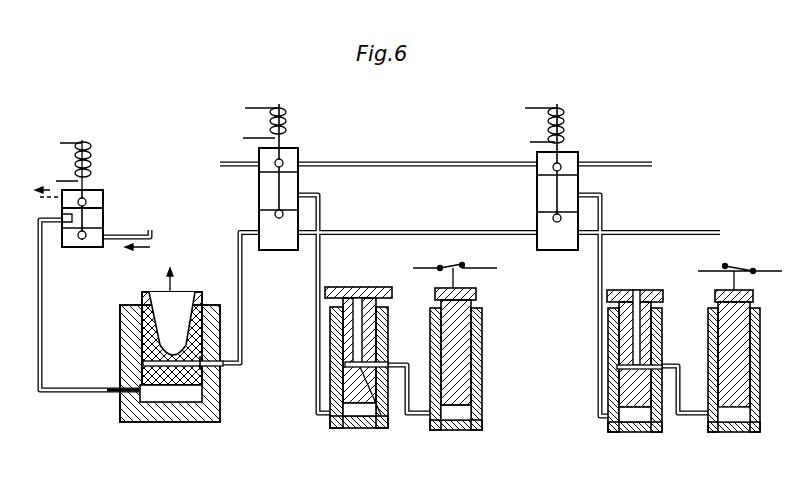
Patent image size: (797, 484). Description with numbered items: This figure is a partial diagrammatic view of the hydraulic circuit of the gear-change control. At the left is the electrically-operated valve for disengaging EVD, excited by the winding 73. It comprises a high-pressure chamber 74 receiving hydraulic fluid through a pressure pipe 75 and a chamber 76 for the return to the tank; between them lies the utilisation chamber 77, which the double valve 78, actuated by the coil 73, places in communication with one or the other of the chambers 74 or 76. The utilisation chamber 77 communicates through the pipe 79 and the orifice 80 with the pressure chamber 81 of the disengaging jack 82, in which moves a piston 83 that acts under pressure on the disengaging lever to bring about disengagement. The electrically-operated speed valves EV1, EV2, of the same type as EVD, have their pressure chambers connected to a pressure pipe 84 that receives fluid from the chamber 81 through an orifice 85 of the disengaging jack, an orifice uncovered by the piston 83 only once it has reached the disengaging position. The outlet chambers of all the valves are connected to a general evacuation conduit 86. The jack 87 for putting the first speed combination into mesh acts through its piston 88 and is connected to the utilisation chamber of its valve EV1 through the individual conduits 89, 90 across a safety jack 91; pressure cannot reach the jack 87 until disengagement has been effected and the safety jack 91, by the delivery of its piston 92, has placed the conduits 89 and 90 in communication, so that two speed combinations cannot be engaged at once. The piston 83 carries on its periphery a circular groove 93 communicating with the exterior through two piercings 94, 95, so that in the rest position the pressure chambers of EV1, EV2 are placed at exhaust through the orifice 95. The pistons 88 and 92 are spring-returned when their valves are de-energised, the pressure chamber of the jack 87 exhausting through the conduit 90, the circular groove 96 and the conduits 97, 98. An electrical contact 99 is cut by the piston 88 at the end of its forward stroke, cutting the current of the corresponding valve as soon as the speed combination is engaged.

The winding 73 is at (92, 164).
The high-pressure chamber 74 is at (100, 243).
The pressure pipe 75 is at (142, 232).
The return chamber 76 is at (110, 185).
The utilisation chamber 77 is at (65, 245).
The double valve 78 is at (88, 218).
The pipe 79 is at (40, 362).
The orifice 80 is at (128, 395).
The pressure chamber 81 is at (172, 397).
The disengaging jack 82 is at (204, 422).
The piston 83 is at (195, 310).
The pressure pipe 84 is at (426, 230).
The orifice 85 is at (222, 372).
The general evacuation conduit 86 is at (452, 162).
The jack 87 is at (480, 375).
The piston 88 is at (462, 298).
The individual conduit 89 is at (318, 323).
The individual conduit 90 is at (410, 418).
The safety jack 91 is at (360, 424).
The piston 92 is at (368, 308).
The circular groove 93 is at (210, 370).
The piercing 94 is at (220, 414).
The piercing 95 is at (170, 356).
The circular groove 96 is at (383, 358).
The conduit 97 is at (382, 420).
The conduit 98 is at (358, 296).
The electrical contact 99 is at (452, 266).
The electrically-operated valve for disengaging EVD is at (90, 214).
The electrically-operated speed valve EV1 is at (293, 177).
The electrically-operated speed valve EV2 is at (571, 177).